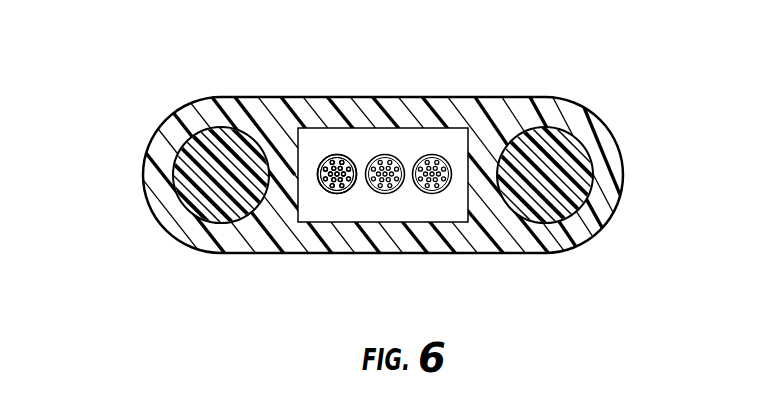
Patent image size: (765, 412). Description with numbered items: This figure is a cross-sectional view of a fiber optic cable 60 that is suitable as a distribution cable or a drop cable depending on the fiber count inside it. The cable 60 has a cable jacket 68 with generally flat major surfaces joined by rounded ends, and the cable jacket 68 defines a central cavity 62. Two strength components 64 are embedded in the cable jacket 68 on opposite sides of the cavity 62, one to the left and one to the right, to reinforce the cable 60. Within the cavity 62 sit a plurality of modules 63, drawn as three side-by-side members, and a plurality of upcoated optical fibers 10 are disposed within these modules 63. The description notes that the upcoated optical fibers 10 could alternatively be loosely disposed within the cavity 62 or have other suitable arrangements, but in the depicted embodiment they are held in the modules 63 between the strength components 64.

The cable 60 is at (368, 181).
The cavity 62 is at (392, 139).
The modules 63 is at (356, 203).
The strength components 64 is at (197, 200).
The cable jacket 68 is at (510, 245).
The upcoated optical fiber 10 is at (324, 186).